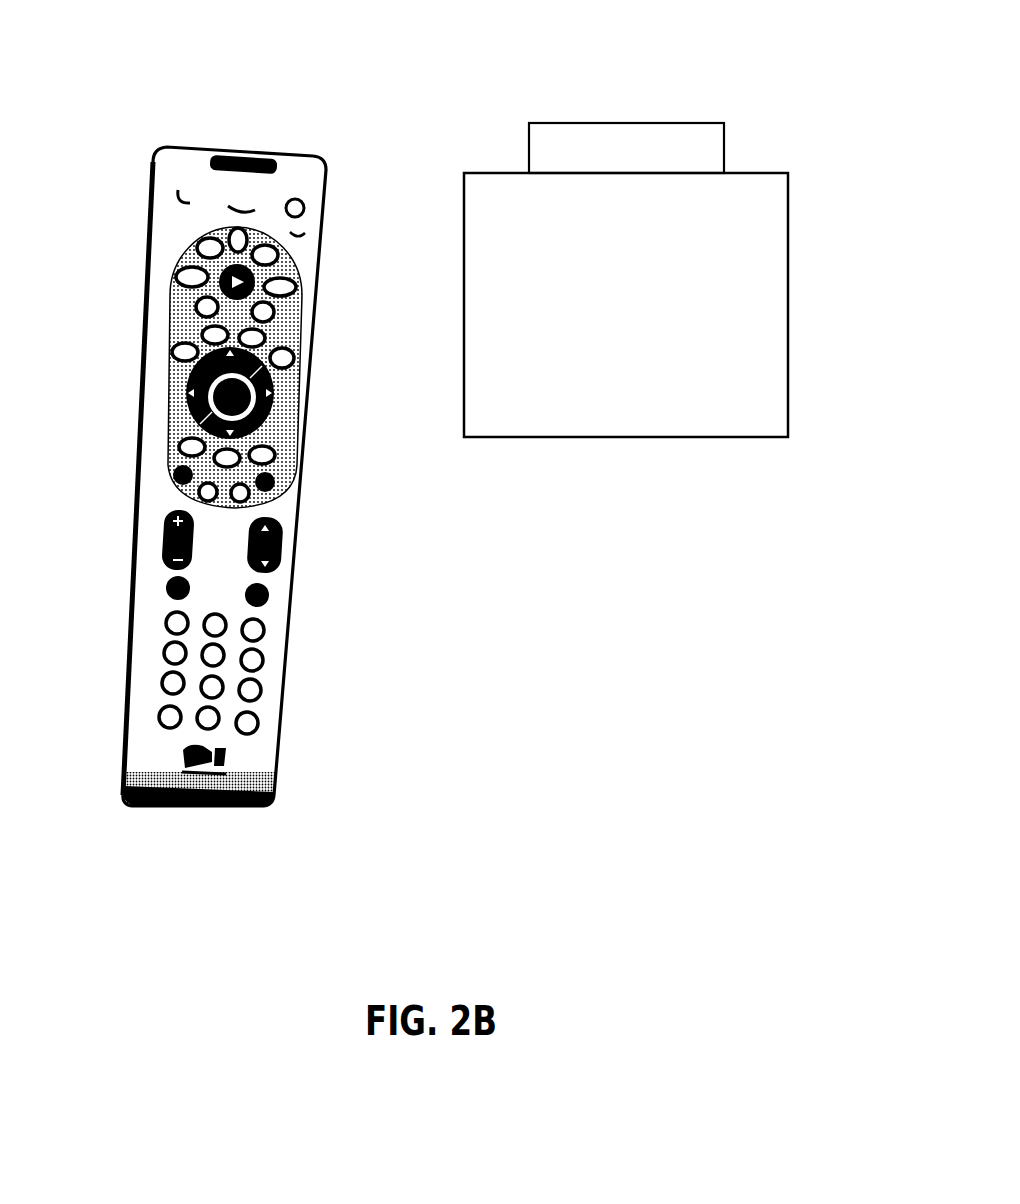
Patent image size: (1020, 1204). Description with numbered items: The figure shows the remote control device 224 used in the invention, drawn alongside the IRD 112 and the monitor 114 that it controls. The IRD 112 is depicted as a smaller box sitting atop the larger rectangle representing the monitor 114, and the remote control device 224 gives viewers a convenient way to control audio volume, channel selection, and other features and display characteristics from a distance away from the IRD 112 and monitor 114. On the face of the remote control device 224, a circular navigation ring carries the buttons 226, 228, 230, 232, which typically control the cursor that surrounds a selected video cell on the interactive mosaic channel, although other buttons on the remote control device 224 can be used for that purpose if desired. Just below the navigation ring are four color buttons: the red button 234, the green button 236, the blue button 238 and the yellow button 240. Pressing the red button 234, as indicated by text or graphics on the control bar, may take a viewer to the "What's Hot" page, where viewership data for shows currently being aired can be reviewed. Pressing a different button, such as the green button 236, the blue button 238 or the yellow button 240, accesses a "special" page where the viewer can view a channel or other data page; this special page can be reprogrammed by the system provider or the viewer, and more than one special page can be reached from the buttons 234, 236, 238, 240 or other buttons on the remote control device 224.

The remote control device 224 is at (238, 138).
The button 226 is at (260, 358).
The button 228 is at (277, 410).
The button 230 is at (217, 427).
The button 232 is at (193, 395).
The red button 234 is at (177, 475).
The green button 236 is at (202, 495).
The blue button 238 is at (277, 487).
The yellow button 240 is at (250, 495).
The IRD 112 is at (627, 122).
The monitor 114 is at (788, 305).